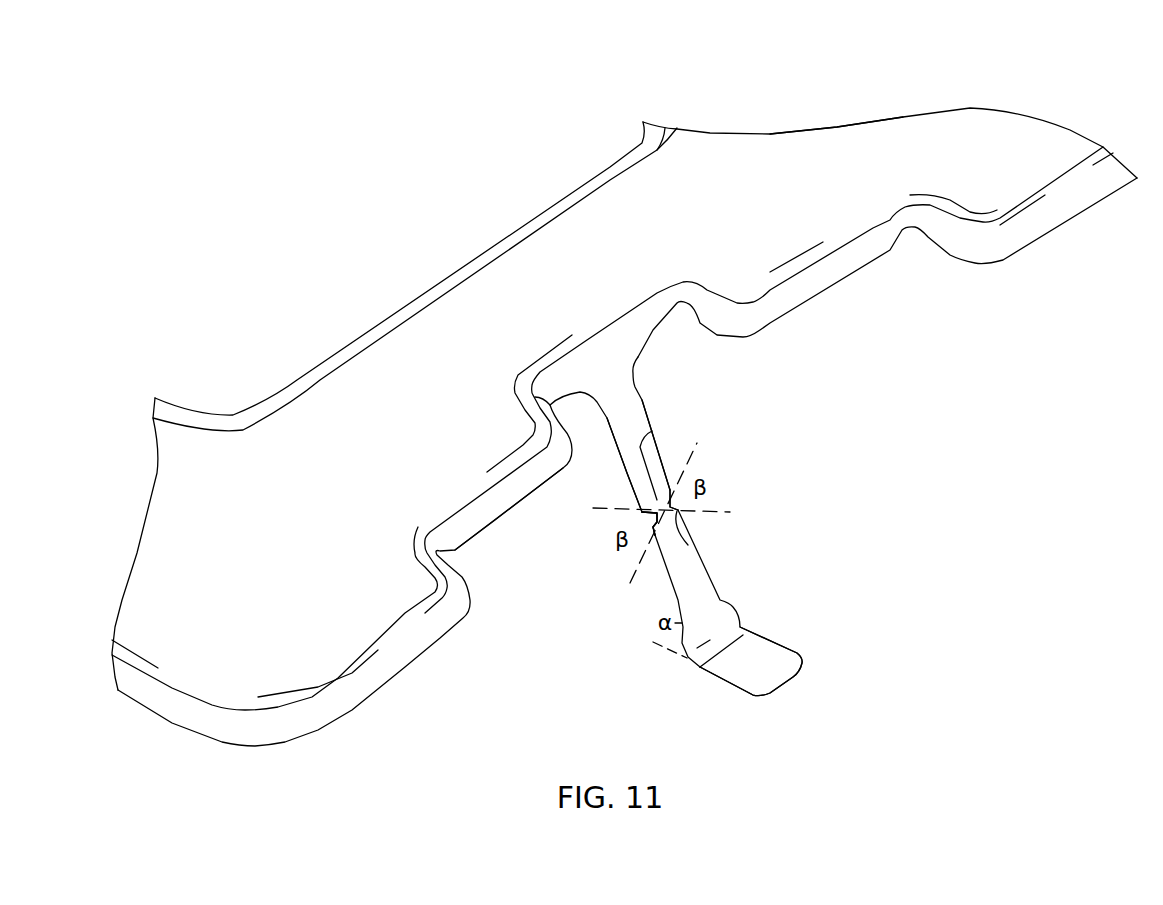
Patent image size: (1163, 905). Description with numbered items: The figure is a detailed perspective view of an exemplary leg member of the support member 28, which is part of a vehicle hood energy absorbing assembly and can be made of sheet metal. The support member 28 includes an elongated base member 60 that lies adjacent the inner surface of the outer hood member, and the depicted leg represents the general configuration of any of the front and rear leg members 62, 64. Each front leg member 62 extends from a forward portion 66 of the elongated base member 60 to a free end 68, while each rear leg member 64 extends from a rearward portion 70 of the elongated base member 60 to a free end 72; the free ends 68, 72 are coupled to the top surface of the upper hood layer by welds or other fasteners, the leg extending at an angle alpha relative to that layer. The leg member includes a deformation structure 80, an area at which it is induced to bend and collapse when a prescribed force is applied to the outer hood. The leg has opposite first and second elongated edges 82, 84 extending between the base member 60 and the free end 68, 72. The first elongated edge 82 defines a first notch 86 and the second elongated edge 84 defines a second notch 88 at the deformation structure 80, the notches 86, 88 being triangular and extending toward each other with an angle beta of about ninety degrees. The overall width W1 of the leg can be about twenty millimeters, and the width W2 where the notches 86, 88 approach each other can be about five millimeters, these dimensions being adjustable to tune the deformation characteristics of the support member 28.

The support member 28 is at (823, 157).
The elongated base member 60 is at (748, 175).
The forward portion 66 is at (781, 380).
The rearward portion 70 is at (775, 295).
The front leg members 62 is at (695, 526).
The rear leg members 64 is at (745, 522).
The free end 68 is at (751, 682).
The free end 72 is at (750, 668).
The deformation structure 80 is at (727, 456).
The first elongated edge 82 is at (622, 465).
The second elongated edge 84 is at (648, 417).
The first notch 86 is at (650, 527).
The second notch 88 is at (693, 544).
The overall width W1 is at (665, 382).
The overall width at the notches W2 is at (620, 500).